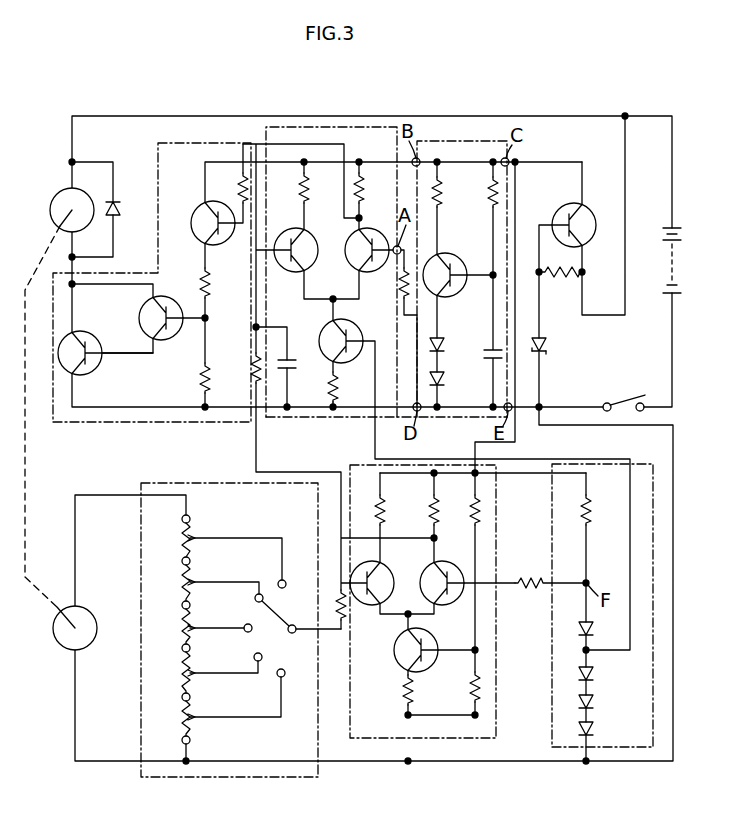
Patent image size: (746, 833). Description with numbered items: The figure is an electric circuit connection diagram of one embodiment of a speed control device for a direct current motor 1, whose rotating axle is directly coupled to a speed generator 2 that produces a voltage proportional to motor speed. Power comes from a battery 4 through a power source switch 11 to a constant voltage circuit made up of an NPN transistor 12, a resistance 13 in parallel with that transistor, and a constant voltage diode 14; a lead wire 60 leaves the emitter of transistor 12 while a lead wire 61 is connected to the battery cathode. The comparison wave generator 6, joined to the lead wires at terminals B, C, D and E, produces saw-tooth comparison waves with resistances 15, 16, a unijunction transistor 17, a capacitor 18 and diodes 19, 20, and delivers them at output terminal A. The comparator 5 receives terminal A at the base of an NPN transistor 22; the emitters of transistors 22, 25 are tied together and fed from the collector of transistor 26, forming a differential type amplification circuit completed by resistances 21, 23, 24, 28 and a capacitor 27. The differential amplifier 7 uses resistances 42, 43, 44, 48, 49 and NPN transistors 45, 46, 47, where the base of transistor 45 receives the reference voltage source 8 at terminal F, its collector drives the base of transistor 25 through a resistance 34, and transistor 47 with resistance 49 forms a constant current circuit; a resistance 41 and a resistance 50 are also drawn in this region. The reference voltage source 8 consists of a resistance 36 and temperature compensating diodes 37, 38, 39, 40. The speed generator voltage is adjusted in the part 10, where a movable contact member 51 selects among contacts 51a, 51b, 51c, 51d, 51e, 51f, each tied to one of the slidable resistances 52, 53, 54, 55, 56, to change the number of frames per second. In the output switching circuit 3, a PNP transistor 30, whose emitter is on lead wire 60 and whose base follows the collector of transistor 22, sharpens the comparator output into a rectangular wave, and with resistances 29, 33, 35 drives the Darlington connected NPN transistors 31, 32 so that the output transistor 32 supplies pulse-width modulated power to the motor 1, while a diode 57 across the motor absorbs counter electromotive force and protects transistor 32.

The direct current motor 1 is at (52, 216).
The speed generator 2 is at (56, 650).
The output switching circuit 3 is at (222, 140).
The power source battery 4 is at (683, 270).
The comparator 5 is at (347, 126).
The comparison wave generator 6 is at (472, 140).
The differential amplifier 7 is at (398, 740).
The reference voltage source 8 is at (620, 750).
The voltage regulating means 10 is at (199, 778).
The power source switch 11 is at (618, 400).
The NPN transistor 12 is at (592, 216).
The resistance 13 is at (564, 278).
The constant voltage diode 14 is at (548, 343).
The resistance 15 is at (440, 200).
The resistance 16 is at (490, 200).
The unijunction transistor 17 is at (462, 262).
The capacitor 18 is at (484, 354).
The diode 19 is at (444, 342).
The diode 20 is at (444, 382).
The resistance 21 is at (400, 284).
The NPN transistor 22 is at (370, 236).
The resistance 23 is at (361, 198).
The resistance 24 is at (305, 198).
The NPN transistor 25 is at (312, 236).
The NPN transistor 26 is at (321, 332).
The capacitor 27 is at (289, 372).
The resistance 28 is at (338, 380).
The resistance 29 is at (240, 196).
The PNP transistor 30 is at (194, 232).
The NPN transistor 31 is at (184, 300).
The NPN transistor 32 is at (104, 338).
The resistance 33 is at (200, 382).
The resistance 34 is at (254, 372).
The resistance 35 is at (210, 284).
The resistance 36 is at (592, 514).
The diode 37 is at (594, 630).
The diode 38 is at (594, 672).
The diode 39 is at (594, 702).
The diode 40 is at (594, 730).
The resistor 41 is at (526, 580).
The resistance 42 is at (480, 514).
The resistance 43 is at (437, 514).
The resistance 44 is at (384, 514).
The NPN transistor 45 is at (448, 572).
The NPN transistor 46 is at (388, 572).
The NPN transistor 47 is at (394, 664).
The resistance 48 is at (482, 684).
The resistance 49 is at (402, 696).
The resistor 50 is at (338, 590).
The movable contact member 51 is at (282, 618).
The contact 51a is at (293, 634).
The fixed contact 51b is at (284, 580).
The fixed contact 51c is at (258, 593).
The fixed contact 51d is at (246, 632).
The fixed contact 51e is at (261, 662).
The fixed contact 51f is at (284, 678).
The slidable resistance 52 is at (192, 538).
The slidable resistance 53 is at (191, 582).
The slidable resistance 54 is at (191, 628).
The slidable resistance 55 is at (191, 673).
The slidable resistance 56 is at (191, 726).
The diode 57 is at (121, 213).
The lead wire 60 is at (538, 162).
The lead wire 61 is at (353, 418).